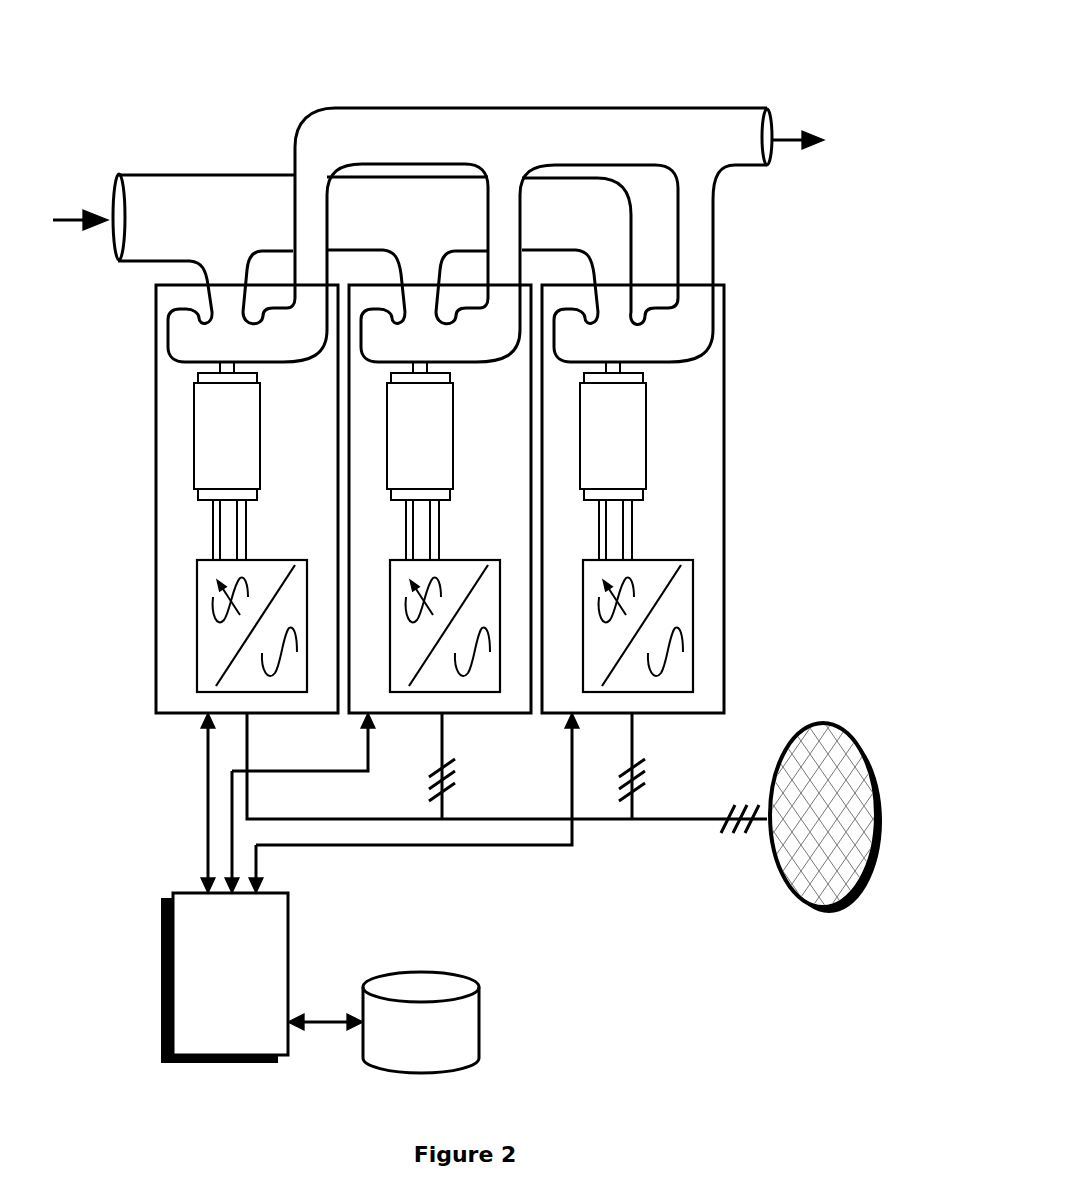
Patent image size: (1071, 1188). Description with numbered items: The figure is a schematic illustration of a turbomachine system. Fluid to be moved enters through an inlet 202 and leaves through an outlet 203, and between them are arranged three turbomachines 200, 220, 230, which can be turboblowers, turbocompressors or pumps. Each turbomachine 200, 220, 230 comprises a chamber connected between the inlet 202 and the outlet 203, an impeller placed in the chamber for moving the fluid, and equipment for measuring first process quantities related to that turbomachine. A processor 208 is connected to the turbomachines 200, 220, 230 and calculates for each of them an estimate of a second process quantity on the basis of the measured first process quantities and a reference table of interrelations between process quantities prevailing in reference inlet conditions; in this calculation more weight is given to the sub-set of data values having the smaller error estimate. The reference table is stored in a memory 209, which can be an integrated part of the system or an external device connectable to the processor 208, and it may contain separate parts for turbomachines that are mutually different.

The turbomachine 200 is at (185, 713).
The turbomachine 220 is at (420, 713).
The turbomachine 230 is at (707, 714).
The inlet 202 is at (107, 203).
The outlet 203 is at (779, 120).
The processor 208 is at (262, 978).
The memory 209 is at (421, 1022).